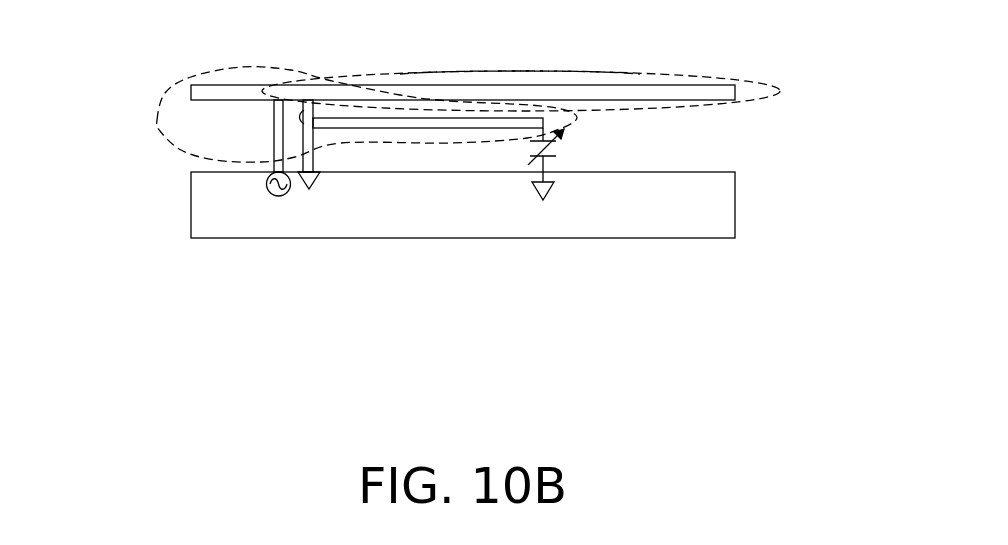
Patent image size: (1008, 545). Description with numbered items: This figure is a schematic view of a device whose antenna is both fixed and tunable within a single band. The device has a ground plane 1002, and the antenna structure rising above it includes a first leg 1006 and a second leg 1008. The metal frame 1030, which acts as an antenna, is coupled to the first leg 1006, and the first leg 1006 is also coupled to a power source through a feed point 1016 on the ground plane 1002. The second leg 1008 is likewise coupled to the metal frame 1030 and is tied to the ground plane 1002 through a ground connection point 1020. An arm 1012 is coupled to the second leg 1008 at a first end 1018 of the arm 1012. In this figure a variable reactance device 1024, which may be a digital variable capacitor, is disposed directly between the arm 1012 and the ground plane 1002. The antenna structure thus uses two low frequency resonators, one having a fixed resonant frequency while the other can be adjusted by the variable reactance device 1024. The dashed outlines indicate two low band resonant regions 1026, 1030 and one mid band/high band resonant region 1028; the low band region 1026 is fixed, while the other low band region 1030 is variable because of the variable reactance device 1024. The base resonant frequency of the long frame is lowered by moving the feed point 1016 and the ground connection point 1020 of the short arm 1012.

The ground plane 1002 is at (720, 217).
The first leg 1006 is at (278, 125).
The second leg 1008 is at (283, 147).
The arm 1012 is at (662, 95).
The feed point 1016 is at (270, 190).
The first end 1018 is at (380, 122).
The ground connection point 1020 is at (310, 185).
The variable reactance device 1024 is at (558, 153).
The low band resonant region 1026 is at (515, 73).
The mid band/high band resonant region 1028 is at (167, 98).
The metal frame 1030 is at (760, 98).